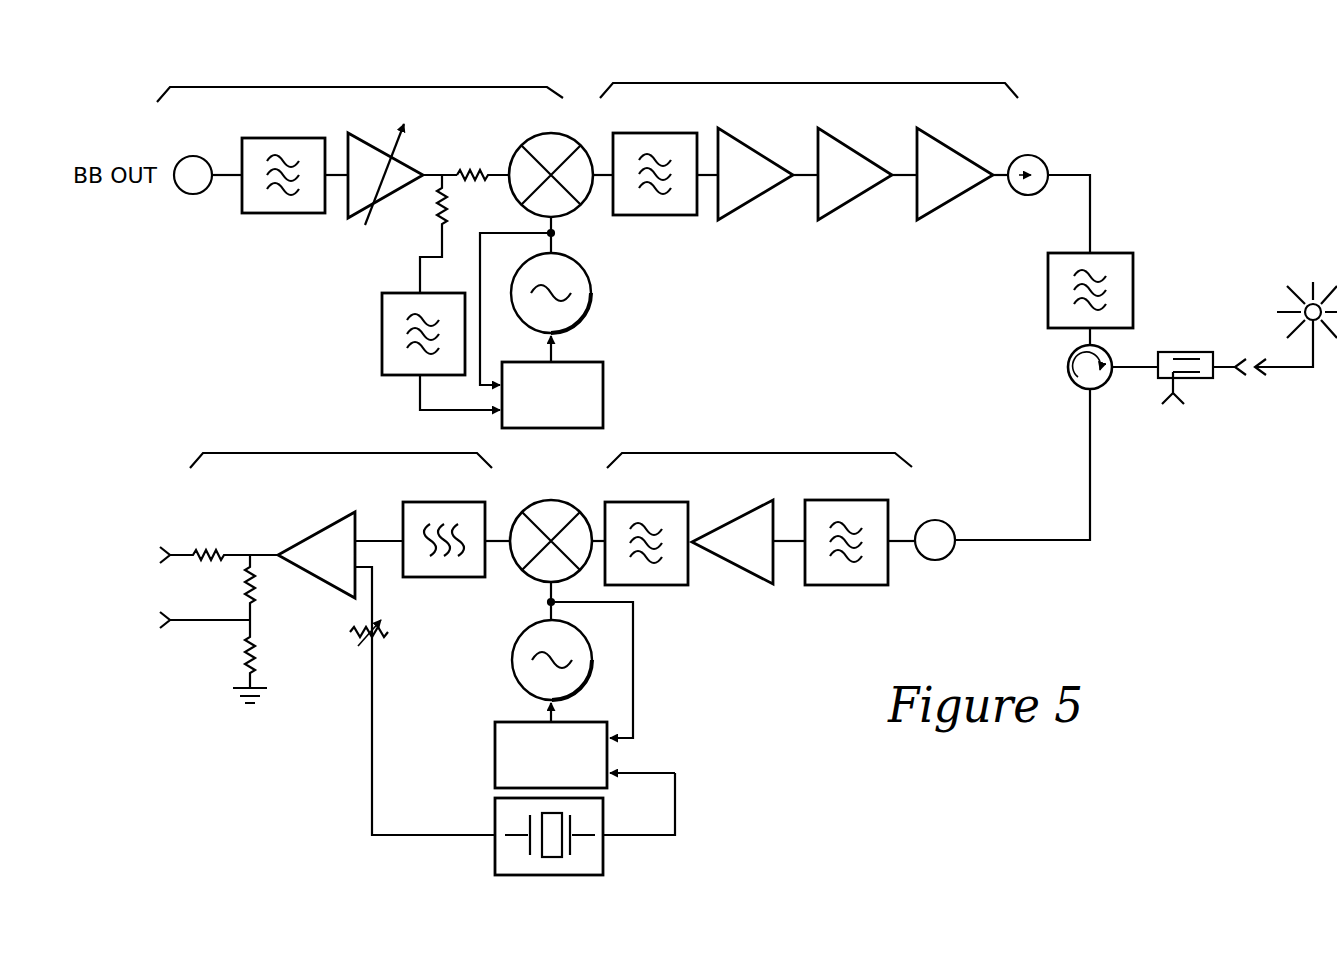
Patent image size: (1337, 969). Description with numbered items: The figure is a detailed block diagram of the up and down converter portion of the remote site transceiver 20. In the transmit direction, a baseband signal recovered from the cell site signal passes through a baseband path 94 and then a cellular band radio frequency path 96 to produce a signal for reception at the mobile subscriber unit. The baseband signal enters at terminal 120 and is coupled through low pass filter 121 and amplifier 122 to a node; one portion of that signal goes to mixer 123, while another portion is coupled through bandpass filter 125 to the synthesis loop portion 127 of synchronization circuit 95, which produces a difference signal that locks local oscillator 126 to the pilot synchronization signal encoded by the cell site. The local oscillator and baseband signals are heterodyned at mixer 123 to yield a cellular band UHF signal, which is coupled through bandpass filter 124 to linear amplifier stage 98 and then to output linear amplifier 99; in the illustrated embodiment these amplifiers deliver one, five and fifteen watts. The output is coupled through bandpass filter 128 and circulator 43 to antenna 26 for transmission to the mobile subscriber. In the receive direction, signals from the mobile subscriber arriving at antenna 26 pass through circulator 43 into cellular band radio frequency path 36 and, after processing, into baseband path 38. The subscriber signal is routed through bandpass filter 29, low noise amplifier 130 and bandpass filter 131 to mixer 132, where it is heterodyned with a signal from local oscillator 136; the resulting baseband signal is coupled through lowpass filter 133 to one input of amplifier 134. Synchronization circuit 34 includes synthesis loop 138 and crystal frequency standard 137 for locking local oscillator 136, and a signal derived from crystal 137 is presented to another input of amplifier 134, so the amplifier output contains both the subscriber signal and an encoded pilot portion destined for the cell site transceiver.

The remote site transceiver 20 is at (552, 62).
The baseband path 94 is at (340, 86).
The cellular band radio frequency path 96 is at (830, 83).
The baseband path 38 is at (273, 453).
The cellular band radio frequency path 36 is at (826, 450).
The terminal 120 is at (223, 118).
The low pass filter 121 is at (305, 138).
The amplifier 122 is at (402, 122).
The bandpass filter 124 is at (442, 165).
The mixer 123 is at (554, 138).
The linear amplifier stage 98 is at (742, 127).
The output linear amplifier 99 is at (953, 137).
The bandpass filter 128 is at (1130, 283).
The circulator 43 is at (1107, 377).
The antenna 26 is at (1310, 293).
The bandpass filter 125 is at (388, 348).
The local oscillator 126 is at (588, 310).
The synchronization circuit 95 is at (652, 333).
The synthesis loop portion 127 is at (593, 402).
The local oscillator 136 is at (153, 512).
The amplifier 134 is at (307, 545).
The lowpass filter 133 is at (428, 502).
The mixer 132 is at (552, 508).
The bandpass filter 131 is at (690, 565).
The low noise amplifier 130 is at (745, 573).
The bandpass filter 29 is at (832, 500).
The synchronization circuit 34 is at (663, 732).
The synthesis loop 138 is at (500, 755).
The crystal frequency standard 137 is at (500, 820).